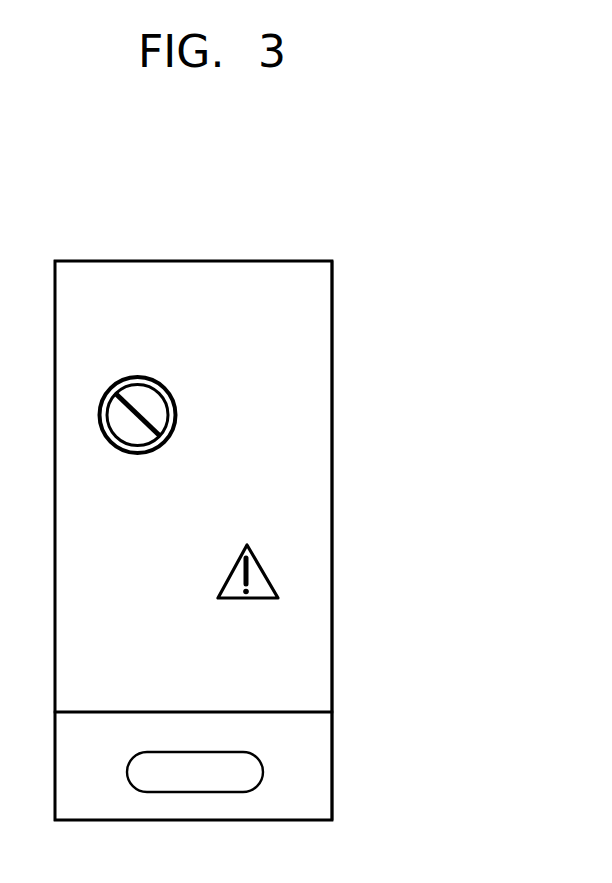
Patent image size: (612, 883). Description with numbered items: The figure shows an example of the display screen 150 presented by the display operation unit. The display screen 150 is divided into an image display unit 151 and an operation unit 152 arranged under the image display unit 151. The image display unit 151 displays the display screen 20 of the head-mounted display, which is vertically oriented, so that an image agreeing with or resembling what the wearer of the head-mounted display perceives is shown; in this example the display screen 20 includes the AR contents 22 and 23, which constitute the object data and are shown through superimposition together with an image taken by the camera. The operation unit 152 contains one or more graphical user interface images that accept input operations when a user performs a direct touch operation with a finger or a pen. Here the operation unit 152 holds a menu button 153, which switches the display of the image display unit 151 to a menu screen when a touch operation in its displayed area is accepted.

The display screen 150 is at (348, 247).
The display screen 20 is at (322, 480).
The image display unit 151 is at (305, 454).
The operation unit 152 is at (320, 768).
The menu button 153 is at (204, 752).
The AR content 22 is at (130, 376).
The AR content 23 is at (257, 548).